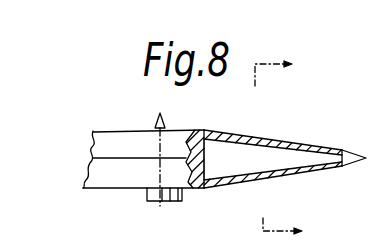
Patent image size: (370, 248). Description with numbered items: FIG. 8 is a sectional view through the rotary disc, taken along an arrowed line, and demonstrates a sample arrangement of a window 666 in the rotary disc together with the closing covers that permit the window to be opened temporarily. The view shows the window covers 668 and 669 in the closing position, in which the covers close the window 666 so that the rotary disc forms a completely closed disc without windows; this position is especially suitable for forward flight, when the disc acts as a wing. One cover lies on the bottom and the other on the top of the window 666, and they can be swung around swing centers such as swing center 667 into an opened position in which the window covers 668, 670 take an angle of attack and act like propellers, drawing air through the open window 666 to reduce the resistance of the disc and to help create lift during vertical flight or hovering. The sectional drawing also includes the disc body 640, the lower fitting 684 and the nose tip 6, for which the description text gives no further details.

The projectile body 640 is at (108, 143).
The bracket 684 is at (151, 192).
The window cover 668 is at (220, 133).
The swing center 667 is at (257, 134).
The window 666 is at (283, 152).
The window cover 669 is at (280, 177).
The window cover 670 is at (220, 188).
The nose tip 6 is at (356, 130).